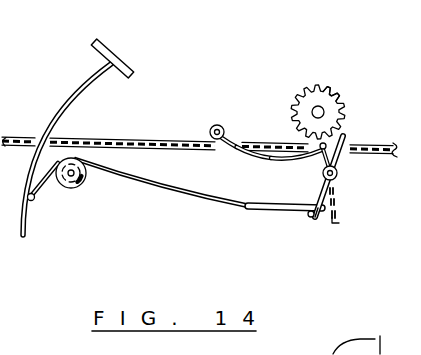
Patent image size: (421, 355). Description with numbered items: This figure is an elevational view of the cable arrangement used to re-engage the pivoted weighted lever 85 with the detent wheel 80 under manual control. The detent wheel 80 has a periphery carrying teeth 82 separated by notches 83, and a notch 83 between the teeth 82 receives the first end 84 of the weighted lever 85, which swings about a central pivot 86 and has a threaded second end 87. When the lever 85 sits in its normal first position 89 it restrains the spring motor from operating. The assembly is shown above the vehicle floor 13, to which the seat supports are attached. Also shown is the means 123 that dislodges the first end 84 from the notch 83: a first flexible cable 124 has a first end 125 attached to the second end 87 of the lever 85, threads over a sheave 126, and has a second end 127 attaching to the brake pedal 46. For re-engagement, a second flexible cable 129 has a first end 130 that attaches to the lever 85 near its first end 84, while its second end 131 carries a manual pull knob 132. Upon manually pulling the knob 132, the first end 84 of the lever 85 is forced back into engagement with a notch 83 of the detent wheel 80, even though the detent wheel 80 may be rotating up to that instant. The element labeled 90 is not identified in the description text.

The vehicle floor 13 is at (78, 138).
The brake pedal 46 is at (108, 44).
The detent wheel 80 is at (298, 95).
The teeth 82 is at (315, 85).
The notch 83 is at (337, 90).
The first end 84 is at (348, 138).
The weighted lever 85 is at (338, 171).
The central pivot 86 is at (338, 191).
The threaded second end 87 is at (308, 217).
The first position 89 is at (339, 223).
The pivot 90 is at (313, 218).
The means 123 is at (182, 196).
The first flexible cable 124 is at (200, 206).
The first end 125 is at (300, 211).
The sheave 126 is at (76, 187).
The second end 127 is at (43, 186).
The second flexible cable 129 is at (246, 151).
The first end 130 is at (314, 160).
The second end 131 is at (231, 135).
The manual pull knob 132 is at (210, 129).